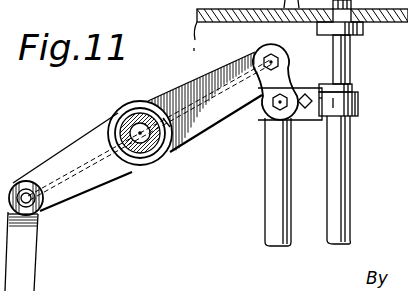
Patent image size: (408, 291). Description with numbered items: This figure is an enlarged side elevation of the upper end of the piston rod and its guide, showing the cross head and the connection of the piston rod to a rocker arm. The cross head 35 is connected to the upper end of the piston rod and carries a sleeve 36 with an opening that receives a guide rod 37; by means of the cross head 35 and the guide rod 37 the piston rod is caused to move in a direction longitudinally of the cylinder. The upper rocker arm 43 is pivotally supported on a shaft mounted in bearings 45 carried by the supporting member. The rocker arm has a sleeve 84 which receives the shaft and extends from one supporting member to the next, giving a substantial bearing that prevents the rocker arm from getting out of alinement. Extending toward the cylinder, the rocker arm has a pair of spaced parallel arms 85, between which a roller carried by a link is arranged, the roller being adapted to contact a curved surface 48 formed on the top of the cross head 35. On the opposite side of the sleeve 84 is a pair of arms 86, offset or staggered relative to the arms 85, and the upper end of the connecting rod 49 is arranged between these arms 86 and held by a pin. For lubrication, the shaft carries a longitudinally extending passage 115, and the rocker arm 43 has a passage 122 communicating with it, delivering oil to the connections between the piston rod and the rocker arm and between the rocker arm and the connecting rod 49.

The cross head 35 is at (304, 97).
The sleeve 36 is at (358, 92).
The guide rod 37 is at (348, 186).
The upper rocker arm 43 is at (192, 82).
The bearing 45 is at (131, 113).
The curved surface 48 is at (284, 72).
The upper connecting rod 49 is at (26, 276).
The sleeve 84 is at (112, 114).
The spaced parallel arms 85 is at (56, 171).
The arms 86 is at (219, 72).
The passage 115 is at (166, 151).
The passage 122 is at (81, 150).